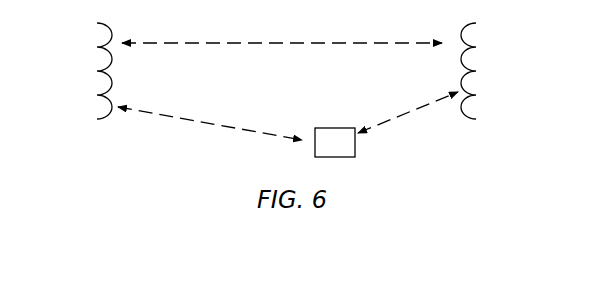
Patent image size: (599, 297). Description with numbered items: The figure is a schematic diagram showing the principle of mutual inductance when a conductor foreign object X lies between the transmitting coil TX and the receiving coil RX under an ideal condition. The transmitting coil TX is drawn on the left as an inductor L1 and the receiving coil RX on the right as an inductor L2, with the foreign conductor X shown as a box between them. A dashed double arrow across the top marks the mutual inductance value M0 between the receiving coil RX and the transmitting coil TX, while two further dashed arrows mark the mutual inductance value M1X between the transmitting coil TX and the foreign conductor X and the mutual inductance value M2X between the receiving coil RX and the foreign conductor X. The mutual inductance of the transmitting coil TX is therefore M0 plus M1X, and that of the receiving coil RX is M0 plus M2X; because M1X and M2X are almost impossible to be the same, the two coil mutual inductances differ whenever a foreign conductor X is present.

The transmit coil inductor L1 is at (104, 59).
The transmitting coil TX is at (67, 79).
The receive coil inductor L2 is at (472, 59).
The receiving coil RX is at (507, 79).
The mutual inductance value between the receiving coil and the transmitting coil M0 is at (282, 30).
The mutual inductance value between the transmitting coil and the foreign conductor M1X is at (210, 131).
The mutual inductance value between the receiving coil and the foreign conductor M2X is at (408, 119).
The conductor foreign object X is at (335, 142).